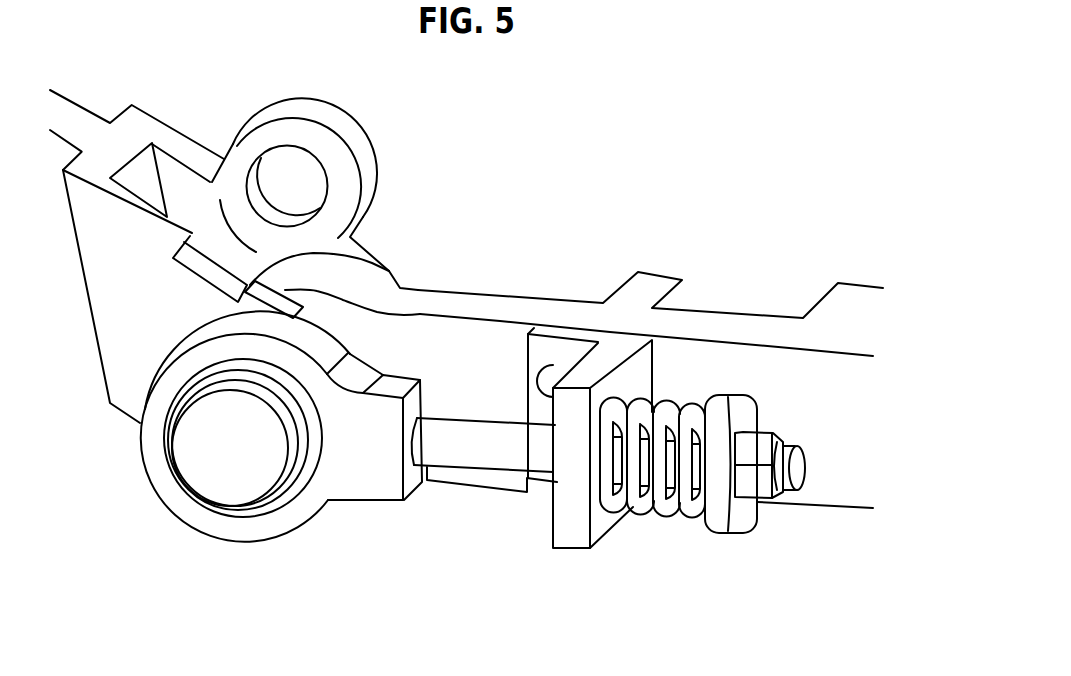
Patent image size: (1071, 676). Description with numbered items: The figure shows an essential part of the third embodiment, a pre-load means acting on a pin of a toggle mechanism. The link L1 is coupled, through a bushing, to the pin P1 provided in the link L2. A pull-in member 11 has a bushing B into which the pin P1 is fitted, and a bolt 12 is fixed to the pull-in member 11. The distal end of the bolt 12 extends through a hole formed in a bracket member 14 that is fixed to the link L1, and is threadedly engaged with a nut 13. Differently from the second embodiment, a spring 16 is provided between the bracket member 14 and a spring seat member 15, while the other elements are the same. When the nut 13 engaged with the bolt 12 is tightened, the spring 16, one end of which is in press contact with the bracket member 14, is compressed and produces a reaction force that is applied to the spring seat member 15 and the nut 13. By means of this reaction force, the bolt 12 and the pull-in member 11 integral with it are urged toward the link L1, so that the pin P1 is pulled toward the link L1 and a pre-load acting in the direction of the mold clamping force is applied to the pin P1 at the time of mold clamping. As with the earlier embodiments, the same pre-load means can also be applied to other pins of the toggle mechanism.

The link L1 is at (718, 318).
The link L2 is at (148, 113).
The bushing B is at (295, 495).
The pin P1 is at (212, 487).
The pull-in member 11 is at (362, 480).
The bolt 12 is at (465, 452).
The nut 13 is at (760, 500).
The bracket member 14 is at (598, 352).
The spring seat member 15 is at (712, 523).
The spring 16 is at (633, 508).